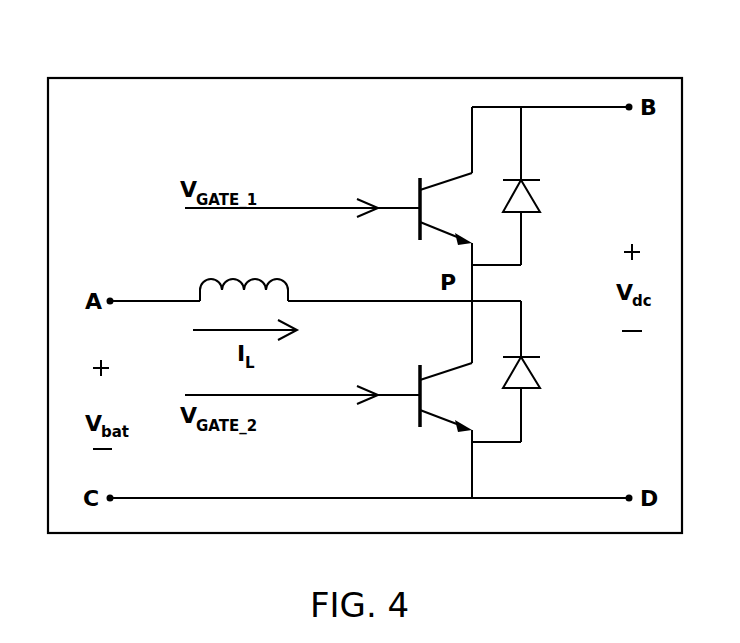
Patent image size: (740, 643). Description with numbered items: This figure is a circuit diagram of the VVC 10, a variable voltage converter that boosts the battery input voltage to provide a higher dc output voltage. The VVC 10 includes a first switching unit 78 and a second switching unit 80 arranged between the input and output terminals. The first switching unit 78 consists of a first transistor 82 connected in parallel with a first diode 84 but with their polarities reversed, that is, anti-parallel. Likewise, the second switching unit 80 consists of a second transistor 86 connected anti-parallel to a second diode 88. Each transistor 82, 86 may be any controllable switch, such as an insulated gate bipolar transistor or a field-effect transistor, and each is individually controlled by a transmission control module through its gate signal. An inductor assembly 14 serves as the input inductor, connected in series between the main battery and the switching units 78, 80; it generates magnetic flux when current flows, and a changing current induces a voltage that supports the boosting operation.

The VVC 10 is at (590, 78).
The inductor assembly 14 is at (210, 278).
The first switching unit 78 is at (400, 187).
The second switching unit 80 is at (406, 389).
The first transistor 82 is at (418, 233).
The first diode 84 is at (530, 213).
The second transistor 86 is at (418, 375).
The second diode 88 is at (530, 389).